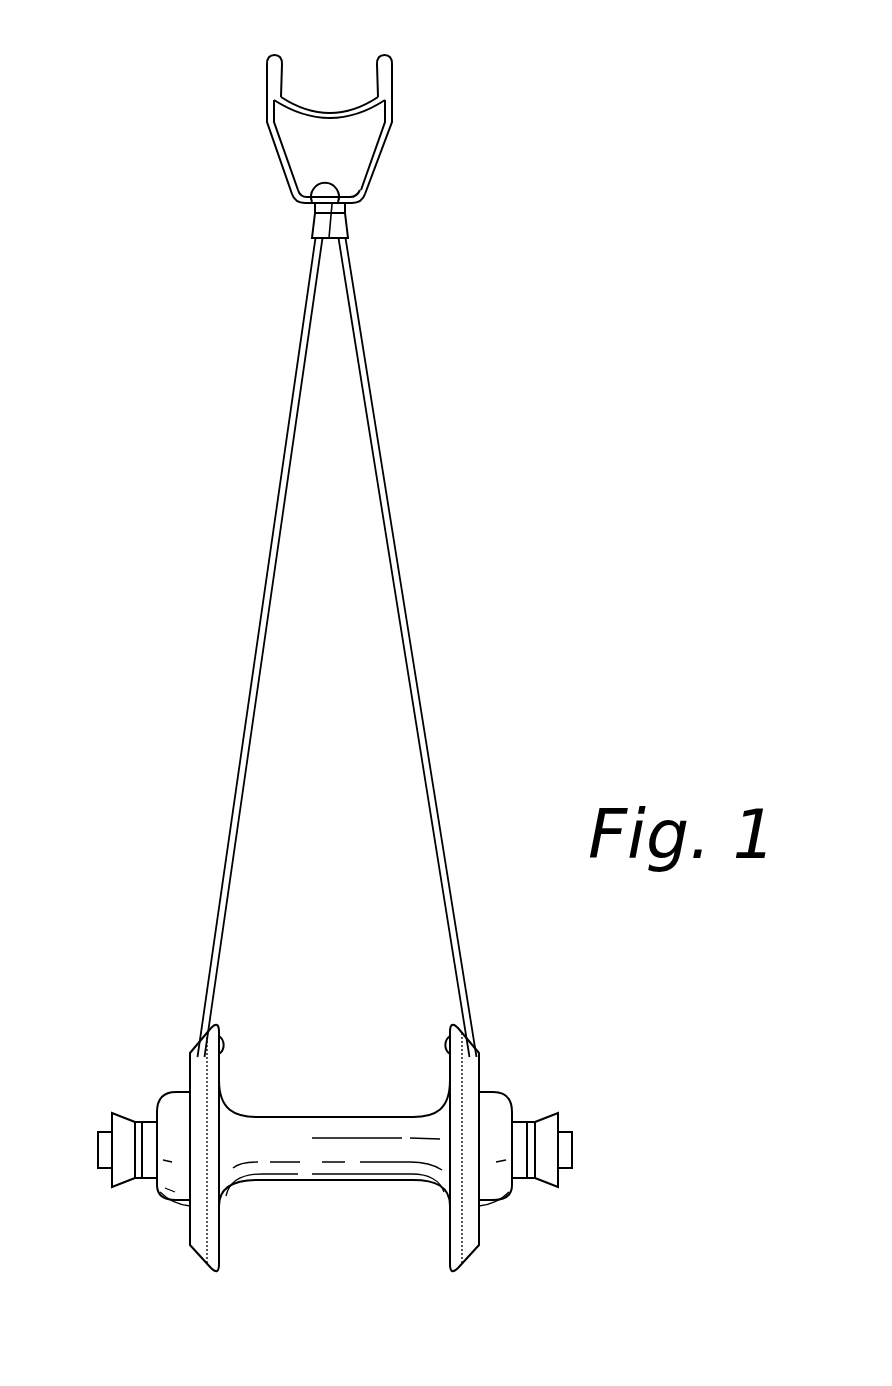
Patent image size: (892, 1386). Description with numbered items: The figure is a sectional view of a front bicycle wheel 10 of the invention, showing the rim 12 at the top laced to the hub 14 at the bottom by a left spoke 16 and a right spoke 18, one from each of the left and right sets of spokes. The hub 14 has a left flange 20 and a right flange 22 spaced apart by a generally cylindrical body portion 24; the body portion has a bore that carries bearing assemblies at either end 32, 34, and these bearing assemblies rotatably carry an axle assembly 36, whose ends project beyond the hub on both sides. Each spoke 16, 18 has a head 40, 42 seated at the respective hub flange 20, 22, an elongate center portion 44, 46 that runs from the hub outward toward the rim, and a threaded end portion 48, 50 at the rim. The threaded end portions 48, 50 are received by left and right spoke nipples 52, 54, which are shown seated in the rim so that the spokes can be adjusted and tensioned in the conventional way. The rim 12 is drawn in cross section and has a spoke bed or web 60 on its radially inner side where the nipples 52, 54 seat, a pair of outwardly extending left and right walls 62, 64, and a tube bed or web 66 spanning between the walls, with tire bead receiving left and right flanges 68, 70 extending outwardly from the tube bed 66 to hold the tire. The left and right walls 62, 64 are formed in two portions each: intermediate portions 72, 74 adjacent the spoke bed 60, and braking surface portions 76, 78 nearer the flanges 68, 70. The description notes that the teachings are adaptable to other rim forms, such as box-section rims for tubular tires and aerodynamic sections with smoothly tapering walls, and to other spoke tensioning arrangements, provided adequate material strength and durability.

The front bicycle wheel 10 is at (423, 702).
The rim 12 is at (392, 130).
The hub 14 is at (507, 1203).
The left spoke 16 is at (217, 917).
The right spoke 18 is at (462, 930).
The left flange 20 is at (210, 1270).
The right flange 22 is at (460, 1270).
The cylindrical body portion 24 is at (352, 1152).
The bearing assembly end 32 is at (167, 1203).
The bearing assembly end 34 is at (553, 1173).
The axle assembly 36 is at (573, 1132).
The spoke head 40 is at (227, 1037).
The spoke head 42 is at (440, 1040).
The elongate center portion 44 is at (273, 522).
The elongate center portion 46 is at (392, 513).
The threaded end portion 48 is at (313, 242).
The threaded end portion 50 is at (350, 242).
The left spoke nipple 52 is at (307, 210).
The right spoke nipple 54 is at (352, 227).
The spoke bed 60 is at (350, 213).
The left wall 62 is at (268, 118).
The right wall 64 is at (393, 117).
The tube bed 66 is at (347, 108).
The left tire bead receiving flange 68 is at (265, 62).
The right tire bead receiving flange 70 is at (395, 63).
The intermediate portion 72 is at (275, 152).
The intermediate portion 74 is at (382, 163).
The braking surface portion 76 is at (266, 88).
The braking surface portion 78 is at (396, 87).